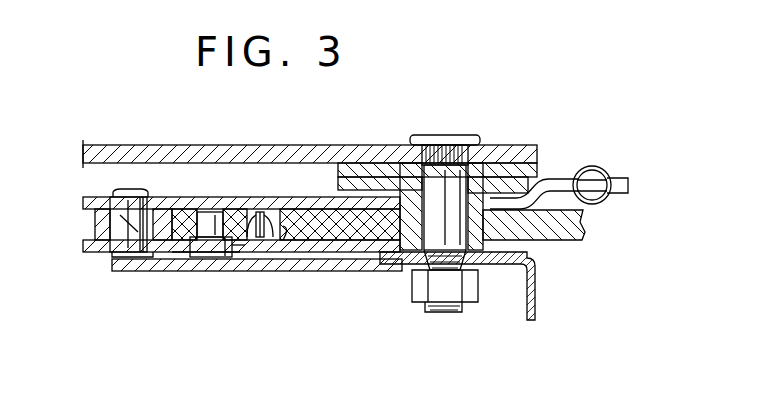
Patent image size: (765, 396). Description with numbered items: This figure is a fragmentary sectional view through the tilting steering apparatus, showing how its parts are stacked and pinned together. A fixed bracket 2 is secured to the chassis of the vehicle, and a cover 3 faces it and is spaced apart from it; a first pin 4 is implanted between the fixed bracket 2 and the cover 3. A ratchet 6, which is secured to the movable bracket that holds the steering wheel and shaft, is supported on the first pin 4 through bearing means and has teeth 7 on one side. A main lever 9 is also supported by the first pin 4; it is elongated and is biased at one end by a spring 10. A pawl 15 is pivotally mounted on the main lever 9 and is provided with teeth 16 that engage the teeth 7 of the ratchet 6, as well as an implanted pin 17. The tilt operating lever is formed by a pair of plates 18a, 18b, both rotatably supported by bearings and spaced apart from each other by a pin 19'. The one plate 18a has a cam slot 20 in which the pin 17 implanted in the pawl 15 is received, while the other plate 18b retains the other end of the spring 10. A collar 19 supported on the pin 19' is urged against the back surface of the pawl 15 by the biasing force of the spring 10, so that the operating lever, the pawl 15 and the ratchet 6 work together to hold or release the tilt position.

The fixed bracket 2 is at (157, 157).
The cover 3 is at (522, 309).
The first pin 4 is at (447, 133).
The ratchet 6 is at (576, 243).
The teeth 7 is at (302, 252).
The main lever 9 is at (342, 176).
The spring 10 is at (593, 166).
The pawl 15 is at (186, 256).
The teeth 16 is at (256, 252).
The implanted pin 17 is at (208, 266).
The plate 18a is at (360, 271).
The plate 18b is at (262, 205).
The collar 19 is at (91, 223).
The pin 19' is at (93, 197).
The cam slot 20 is at (240, 265).